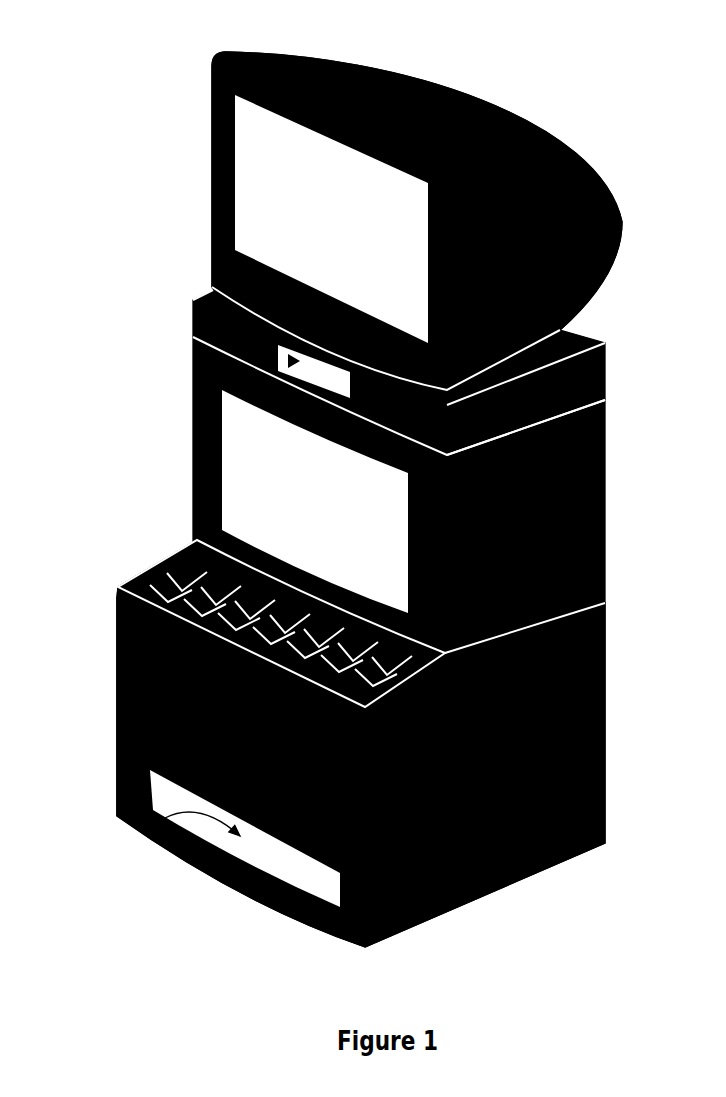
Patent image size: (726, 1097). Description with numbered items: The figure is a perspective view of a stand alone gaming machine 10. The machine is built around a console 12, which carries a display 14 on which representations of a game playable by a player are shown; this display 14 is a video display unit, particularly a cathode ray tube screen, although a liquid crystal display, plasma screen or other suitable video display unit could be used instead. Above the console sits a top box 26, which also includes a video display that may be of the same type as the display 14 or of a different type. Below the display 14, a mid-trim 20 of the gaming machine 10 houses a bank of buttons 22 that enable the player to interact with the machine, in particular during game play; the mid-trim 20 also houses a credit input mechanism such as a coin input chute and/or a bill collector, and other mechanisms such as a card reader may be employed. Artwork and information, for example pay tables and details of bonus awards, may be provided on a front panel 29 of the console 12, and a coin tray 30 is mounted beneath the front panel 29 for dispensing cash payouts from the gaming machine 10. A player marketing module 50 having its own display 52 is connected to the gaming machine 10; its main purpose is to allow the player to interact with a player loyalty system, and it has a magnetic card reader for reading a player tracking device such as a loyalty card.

The gaming machine 10 is at (562, 87).
The console 12 is at (603, 523).
The display 14 is at (243, 438).
The mid-trim 20 is at (148, 558).
The bank of buttons 22 is at (120, 620).
The top box 26 is at (207, 148).
The front panel 29 is at (117, 738).
The coin tray 30 is at (127, 835).
The player marketing module (PMM) 50 is at (610, 373).
The display 52 is at (193, 337).